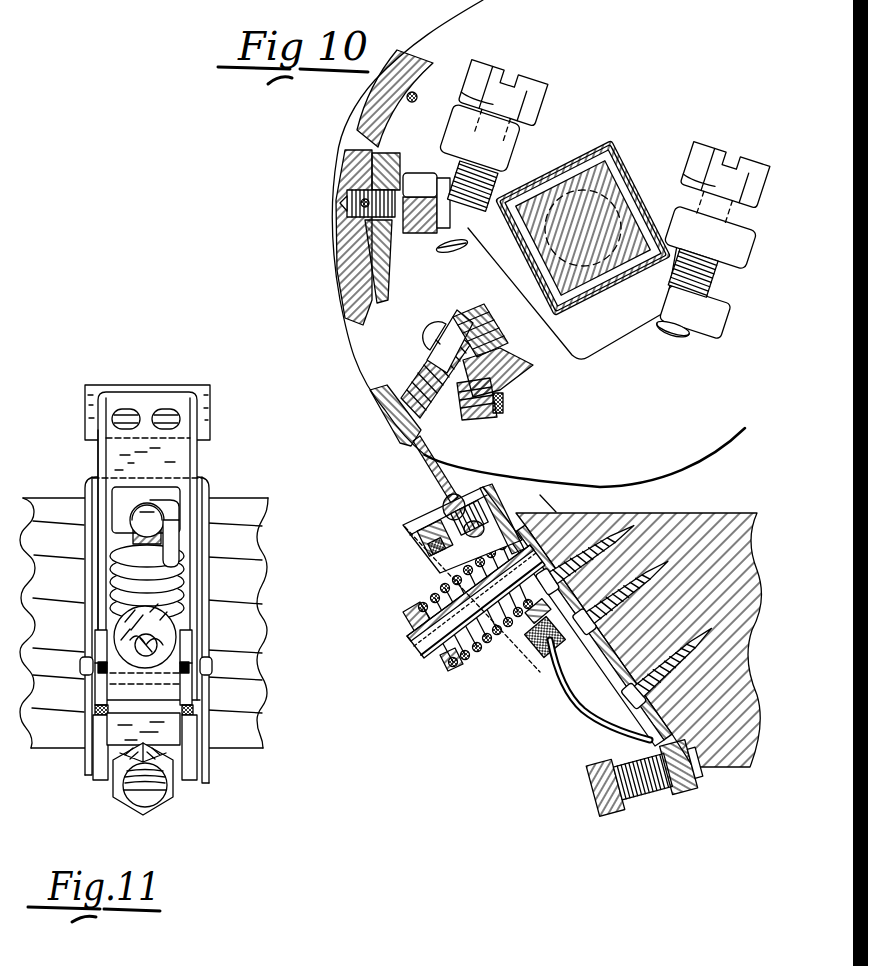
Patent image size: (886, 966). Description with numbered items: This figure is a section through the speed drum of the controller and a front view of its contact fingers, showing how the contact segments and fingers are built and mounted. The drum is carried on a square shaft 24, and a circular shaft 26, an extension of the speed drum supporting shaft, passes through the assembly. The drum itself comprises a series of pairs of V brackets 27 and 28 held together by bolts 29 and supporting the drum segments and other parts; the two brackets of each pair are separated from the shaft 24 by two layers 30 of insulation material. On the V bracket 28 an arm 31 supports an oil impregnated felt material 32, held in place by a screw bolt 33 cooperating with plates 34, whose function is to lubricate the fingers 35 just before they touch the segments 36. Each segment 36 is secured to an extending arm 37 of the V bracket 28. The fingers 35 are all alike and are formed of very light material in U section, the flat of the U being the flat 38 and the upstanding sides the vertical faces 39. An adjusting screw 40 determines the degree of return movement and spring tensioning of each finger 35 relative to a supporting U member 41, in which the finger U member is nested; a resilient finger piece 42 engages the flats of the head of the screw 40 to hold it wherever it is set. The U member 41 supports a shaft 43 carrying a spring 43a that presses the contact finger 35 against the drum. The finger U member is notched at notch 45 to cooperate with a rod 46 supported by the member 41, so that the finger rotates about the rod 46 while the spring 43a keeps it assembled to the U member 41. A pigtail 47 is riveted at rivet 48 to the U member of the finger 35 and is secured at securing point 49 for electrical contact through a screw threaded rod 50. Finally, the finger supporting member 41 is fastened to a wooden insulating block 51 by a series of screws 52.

In FIG. 10, the square shaft 24 is at (612, 144).
In FIG. 10, the circular shaft 26 is at (620, 168).
In FIG. 10, the V bracket 27 is at (571, 130).
In FIG. 10, the V bracket 28 is at (634, 316).
In FIG. 10, the bolts 29 is at (527, 77).
In FIG. 10, the layers of insulation material 30 is at (680, 180).
In FIG. 10, the arm 31 is at (521, 357).
In FIG. 10, the oil impregnated felt material 32 is at (407, 397).
In FIG. 10, the screw bolt 33 is at (430, 330).
In FIG. 10, the plates 34 is at (457, 326).
In FIG. 10, the fingers 35 is at (388, 404).
In FIG. 11, the fingers 35 is at (208, 390).
In FIG. 10, the segments 36 is at (348, 232).
In FIG. 10, the extending arm 37 is at (441, 248).
In FIG. 10, the flat of the U 38 is at (421, 464).
In FIG. 11, the flat of the U 38 is at (152, 460).
In FIG. 10, the vertical faces 39 is at (402, 493).
In FIG. 11, the vertical faces 39 is at (100, 446).
In FIG. 10, the adjusting screw 40 is at (440, 568).
In FIG. 11, the adjusting screw 40 is at (128, 518).
In FIG. 10, the supporting U member 41 is at (548, 500).
In FIG. 11, the supporting U member 41 is at (200, 615).
In FIG. 10, the resilient finger piece 42 is at (430, 542).
In FIG. 11, the resilient finger piece 42 is at (190, 523).
In FIG. 10, the shaft 43 is at (430, 638).
In FIG. 11, the shaft 43 is at (133, 660).
In FIG. 10, the spring 43a is at (462, 642).
In FIG. 11, the spring 43a is at (180, 595).
In FIG. 10, the notch 45 is at (588, 690).
In FIG. 10, the rod 46 is at (600, 660).
In FIG. 11, the rod 46 is at (172, 667).
In FIG. 10, the pigtail 47 is at (600, 705).
In FIG. 11, the pigtail 47 is at (158, 706).
In FIG. 10, the rivet 48 is at (512, 665).
In FIG. 10, the securing point 49 is at (687, 792).
In FIG. 10, the screw threaded rod 50 is at (650, 795).
In FIG. 11, the screw threaded rod 50 is at (167, 797).
In FIG. 10, the wooden insulating block 51 is at (727, 772).
In FIG. 10, the screws 52 is at (633, 524).